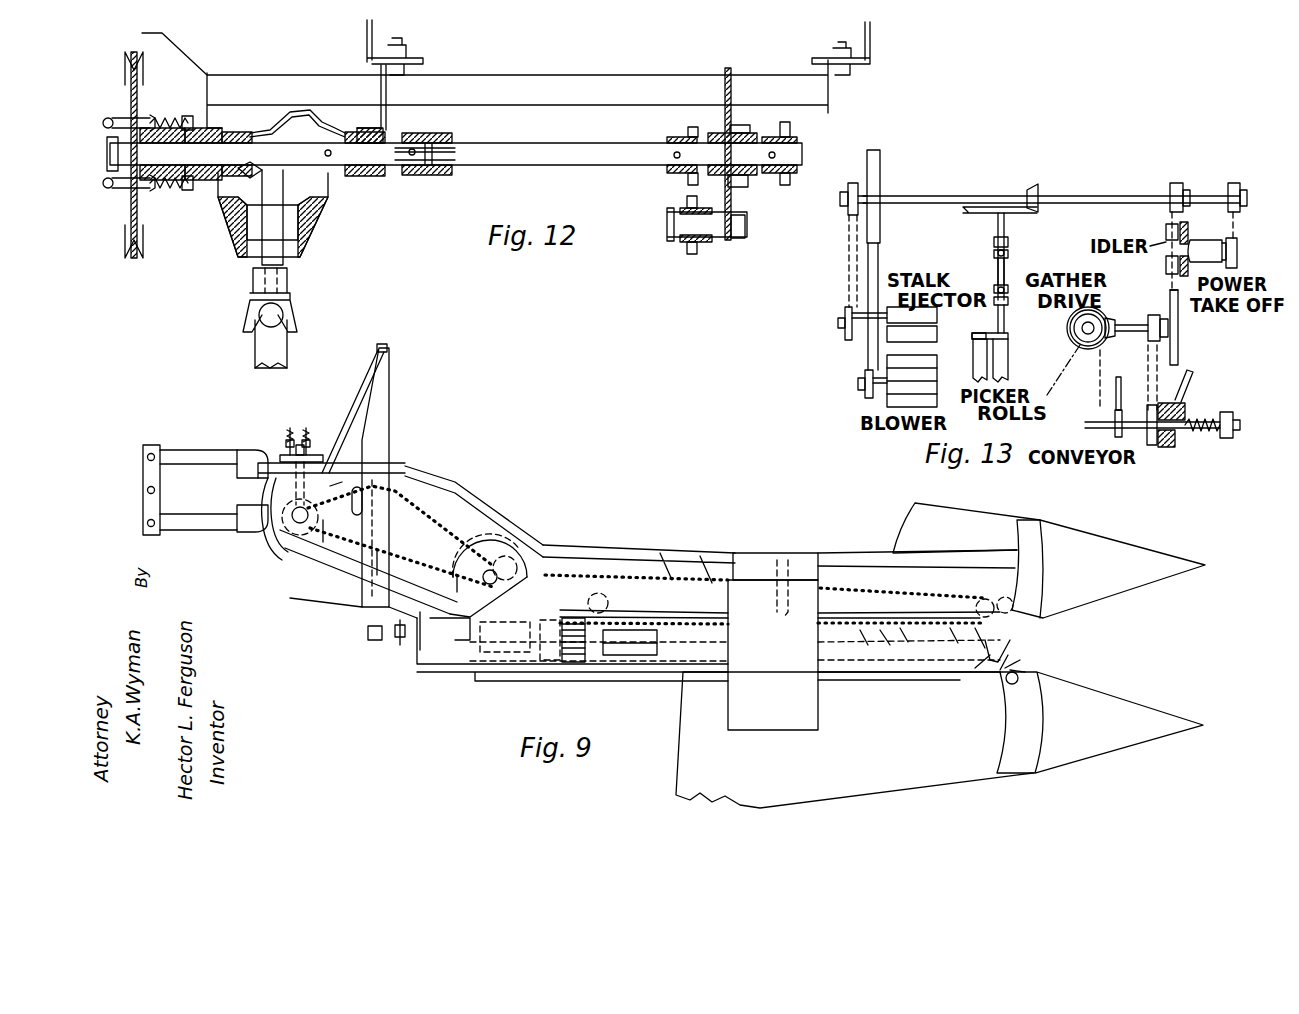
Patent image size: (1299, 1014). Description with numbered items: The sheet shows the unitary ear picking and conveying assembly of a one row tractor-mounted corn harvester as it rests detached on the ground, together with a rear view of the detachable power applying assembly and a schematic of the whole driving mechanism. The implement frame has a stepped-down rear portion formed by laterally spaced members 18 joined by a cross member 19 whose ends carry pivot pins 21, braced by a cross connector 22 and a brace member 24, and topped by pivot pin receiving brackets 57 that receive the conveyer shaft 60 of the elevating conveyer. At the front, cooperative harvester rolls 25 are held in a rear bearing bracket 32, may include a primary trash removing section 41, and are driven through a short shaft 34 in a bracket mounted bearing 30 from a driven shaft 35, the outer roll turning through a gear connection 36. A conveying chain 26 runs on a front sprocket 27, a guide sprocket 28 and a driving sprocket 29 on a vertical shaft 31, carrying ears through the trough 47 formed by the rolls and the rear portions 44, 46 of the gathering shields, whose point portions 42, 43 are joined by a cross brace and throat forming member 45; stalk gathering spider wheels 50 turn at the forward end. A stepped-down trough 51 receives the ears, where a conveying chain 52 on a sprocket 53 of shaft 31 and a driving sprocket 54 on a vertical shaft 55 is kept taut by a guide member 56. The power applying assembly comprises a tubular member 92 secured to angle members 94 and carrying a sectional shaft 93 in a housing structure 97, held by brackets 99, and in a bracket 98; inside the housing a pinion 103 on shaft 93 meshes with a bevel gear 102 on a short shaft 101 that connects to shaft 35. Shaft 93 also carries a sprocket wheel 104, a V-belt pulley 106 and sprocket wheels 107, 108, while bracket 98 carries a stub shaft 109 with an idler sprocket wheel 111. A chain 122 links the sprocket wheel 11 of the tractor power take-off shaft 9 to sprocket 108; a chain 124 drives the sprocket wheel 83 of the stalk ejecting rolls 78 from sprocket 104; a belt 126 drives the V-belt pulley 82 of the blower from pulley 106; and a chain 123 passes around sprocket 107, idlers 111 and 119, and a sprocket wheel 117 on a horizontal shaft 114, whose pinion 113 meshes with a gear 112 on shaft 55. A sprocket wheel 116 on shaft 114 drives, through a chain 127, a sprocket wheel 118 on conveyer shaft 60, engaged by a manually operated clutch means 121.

In FIG. 13, the power take-off shaft 9 is at (1238, 258).
In FIG. 13, the power transmitting sprocket wheel 11 is at (1234, 247).
In FIG. 9, the laterally spaced members 18 is at (187, 450).
In FIG. 9, the cross member 19 is at (392, 413).
In FIG. 9, the pivot pins 21 is at (393, 342).
In FIG. 9, the cross connector 22 is at (143, 470).
In FIG. 9, the brace member 24 is at (362, 386).
In FIG. 13, the harvester rolls 25 is at (973, 363).
In FIG. 9, the harvester rolls 25 is at (925, 646).
In FIG. 9, the conveying chain 26 is at (676, 583).
In FIG. 9, the front sprocket 27 is at (1000, 603).
In FIG. 9, the guide sprocket 28 is at (603, 605).
In FIG. 9, the driving sprocket 29 is at (488, 597).
In FIG. 9, the bracket mounted bearing 30 is at (410, 625).
In FIG. 9, the vertical shaft 31 is at (490, 562).
In FIG. 9, the rear bearing bracket 32 is at (548, 655).
In FIG. 13, the short shaft 34 is at (1006, 325).
In FIG. 9, the short shaft 34 is at (446, 635).
In FIG. 12, the driven shaft 35 is at (258, 340).
In FIG. 13, the driven shaft 35 is at (998, 268).
In FIG. 9, the driven shaft 35 is at (395, 640).
In FIG. 13, the gear connection 36 is at (980, 333).
In FIG. 9, the gear connection 36 is at (538, 640).
In FIG. 9, the primary trash removing section 41 is at (595, 662).
In FIG. 9, the point portion of inner gathering shield 42 is at (1148, 550).
In FIG. 9, the point portion of outer gathering shield 43 is at (1154, 708).
In FIG. 9, the rear portion of inner gathering shield 44 is at (913, 524).
In FIG. 9, the cross brace and throat forming member 45 is at (728, 697).
In FIG. 9, the rear portion of outer gathering shield 46 is at (945, 770).
In FIG. 9, the trough 47 is at (683, 655).
In FIG. 9, the stalk gathering spider wheels 50 is at (1012, 660).
In FIG. 9, the trough 51 is at (418, 582).
In FIG. 13, the conveying chain 52 is at (1052, 392).
In FIG. 9, the conveying chain 52 is at (429, 522).
In FIG. 9, the sprocket 53 is at (486, 557).
In FIG. 13, the driving sprocket 54 is at (1072, 336).
In FIG. 9, the driving sprocket 54 is at (316, 520).
In FIG. 13, the vertical shaft 55 is at (1090, 348).
In FIG. 9, the vertical shaft 55 is at (317, 510).
In FIG. 9, the guide member 56 is at (366, 499).
In FIG. 9, the pivot pin receiving brackets 57 is at (244, 451).
In FIG. 13, the conveyer shaft 60 is at (1098, 422).
In FIG. 13, the stalk ejecting rolls 78 is at (937, 316).
In FIG. 13, the V-belt pulley 82 is at (864, 386).
In FIG. 13, the sprocket wheel 83 is at (842, 328).
In FIG. 12, the tubular member 92 is at (565, 75).
In FIG. 12, the sectional shaft 93 is at (440, 188).
In FIG. 13, the sectional shaft 93 is at (950, 196).
In FIG. 12, the angle members 94 is at (366, 28).
In FIG. 12, the housing structure 97 is at (355, 174).
In FIG. 12, the bracket 98 is at (731, 72).
In FIG. 13, the bracket 98 is at (1186, 232).
In FIG. 12, the brackets 99 is at (208, 118).
In FIG. 12, the short shaft 101 is at (262, 261).
In FIG. 13, the short shaft 101 is at (1004, 236).
In FIG. 12, the bevel gear 102 is at (243, 169).
In FIG. 13, the bevel gear 102 is at (978, 211).
In FIG. 12, the pinion 103 is at (320, 145).
In FIG. 13, the pinion 103 is at (1034, 186).
In FIG. 12, the sprocket wheel 104 is at (114, 132).
In FIG. 13, the sprocket wheel 104 is at (850, 192).
In FIG. 12, the V-belt pulley 106 is at (142, 86).
In FIG. 13, the V-belt pulley 106 is at (880, 170).
In FIG. 12, the sprocket wheel 107 is at (692, 136).
In FIG. 13, the sprocket wheel 107 is at (1176, 185).
In FIG. 12, the sprocket wheel 108 is at (790, 140).
In FIG. 13, the sprocket wheel 108 is at (1235, 180).
In FIG. 12, the stub shaft 109 is at (722, 233).
In FIG. 13, the stub shaft 109 is at (1166, 232).
In FIG. 12, the idler sprocket wheel 111 is at (685, 238).
In FIG. 13, the idler sprocket wheel 111 is at (1168, 227).
In FIG. 13, the gear 112 is at (1076, 318).
In FIG. 13, the pinion 113 is at (1110, 323).
In FIG. 13, the horizontal shaft 114 is at (1130, 332).
In FIG. 9, the horizontal shaft 114 is at (291, 483).
In FIG. 13, the sprocket wheel 116 is at (1155, 322).
In FIG. 9, the sprocket wheel 116 is at (327, 491).
In FIG. 13, the sprocket wheel 117 is at (1178, 345).
In FIG. 9, the sprocket wheel 117 is at (313, 445).
In FIG. 13, the sprocket wheel 118 is at (1152, 447).
In FIG. 13, the idler sprocket 119 is at (1166, 268).
In FIG. 13, the clutch means 121 is at (1184, 440).
In FIG. 13, the chain 122 is at (1234, 236).
In FIG. 13, the chain 123 is at (1168, 288).
In FIG. 13, the chain 124 is at (840, 262).
In FIG. 13, the belt 126 is at (878, 266).
In FIG. 13, the chain 127 is at (1150, 368).